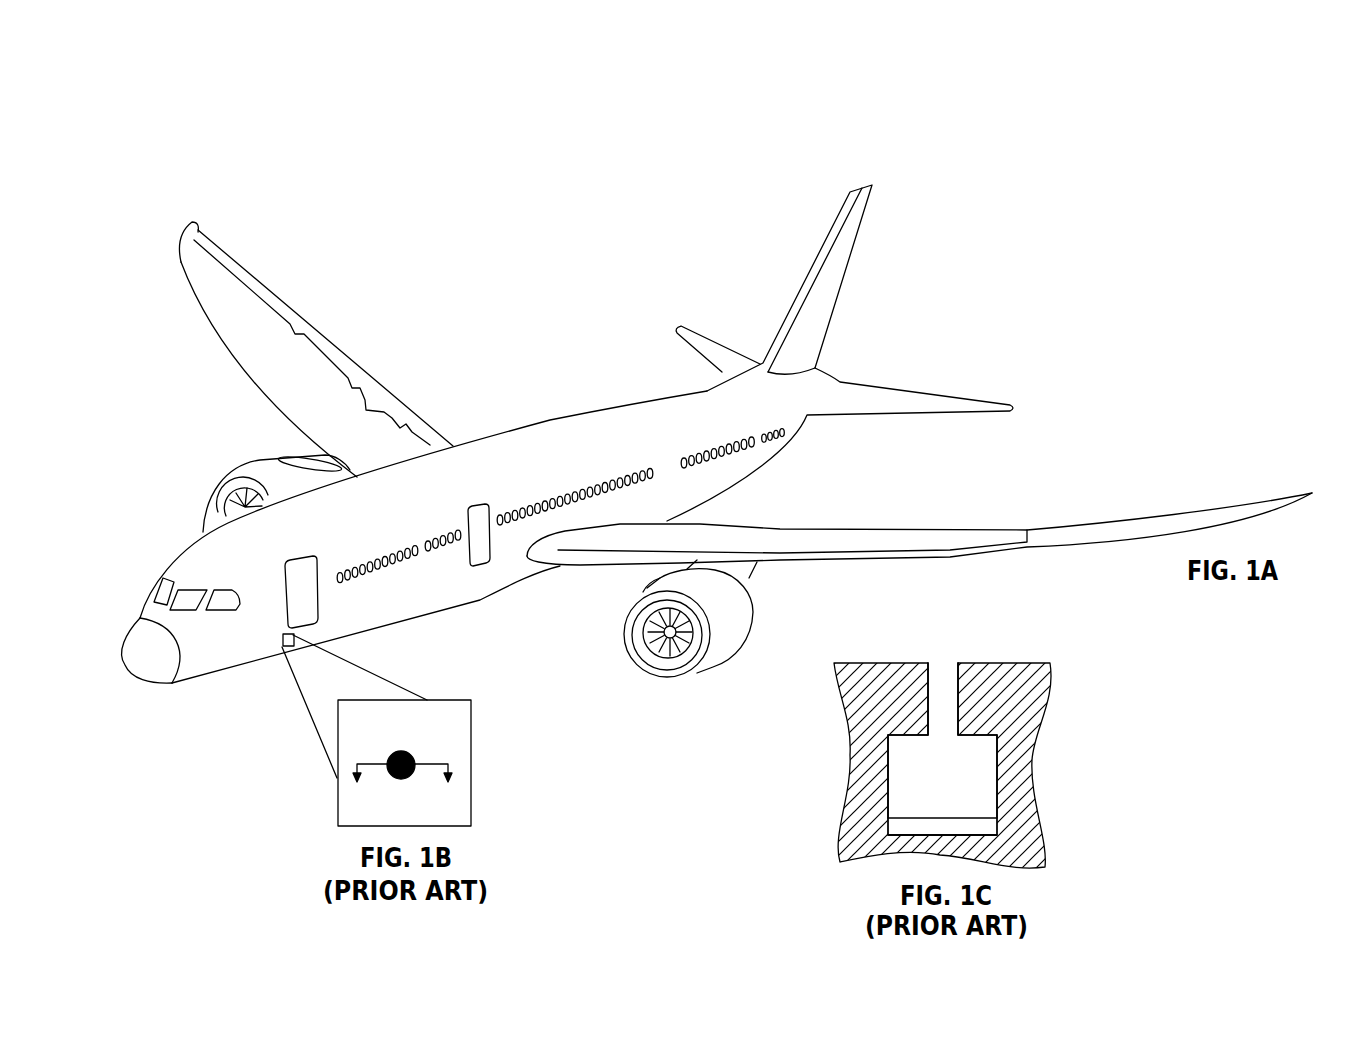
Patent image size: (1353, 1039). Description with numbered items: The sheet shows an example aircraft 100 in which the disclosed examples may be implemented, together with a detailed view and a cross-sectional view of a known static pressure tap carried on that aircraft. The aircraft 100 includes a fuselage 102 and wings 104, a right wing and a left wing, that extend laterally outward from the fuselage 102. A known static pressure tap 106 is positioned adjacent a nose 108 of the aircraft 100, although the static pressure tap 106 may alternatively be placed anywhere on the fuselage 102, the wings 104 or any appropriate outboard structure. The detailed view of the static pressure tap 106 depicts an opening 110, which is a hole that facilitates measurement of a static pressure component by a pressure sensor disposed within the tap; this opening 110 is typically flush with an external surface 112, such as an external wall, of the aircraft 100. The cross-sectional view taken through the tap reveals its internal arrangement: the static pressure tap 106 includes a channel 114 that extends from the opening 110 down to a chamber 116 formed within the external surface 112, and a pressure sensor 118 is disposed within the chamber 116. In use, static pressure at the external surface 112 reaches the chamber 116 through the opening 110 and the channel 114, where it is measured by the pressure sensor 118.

In FIG. 1A, the aircraft 100 is at (1210, 55).
In FIG. 1A, the fuselage 102 is at (601, 403).
In FIG. 1A, the wings 104 is at (235, 288).
In FIG. 1A, the static pressure tap 106 is at (282, 634).
In FIG. 1B, the static pressure tap 106 is at (470, 701).
In FIG. 1C, the static pressure tap 106 is at (1045, 662).
In FIG. 1A, the nose 108 is at (166, 566).
In FIG. 1B, the opening 110 is at (404, 752).
In FIG. 1C, the opening 110 is at (943, 662).
In FIG. 1B, the external surface 112 is at (457, 807).
In FIG. 1C, the external surface 112 is at (858, 662).
In FIG. 1C, the channel 114 is at (938, 713).
In FIG. 1C, the chamber 116 is at (988, 777).
In FIG. 1C, the pressure sensor 118 is at (990, 815).